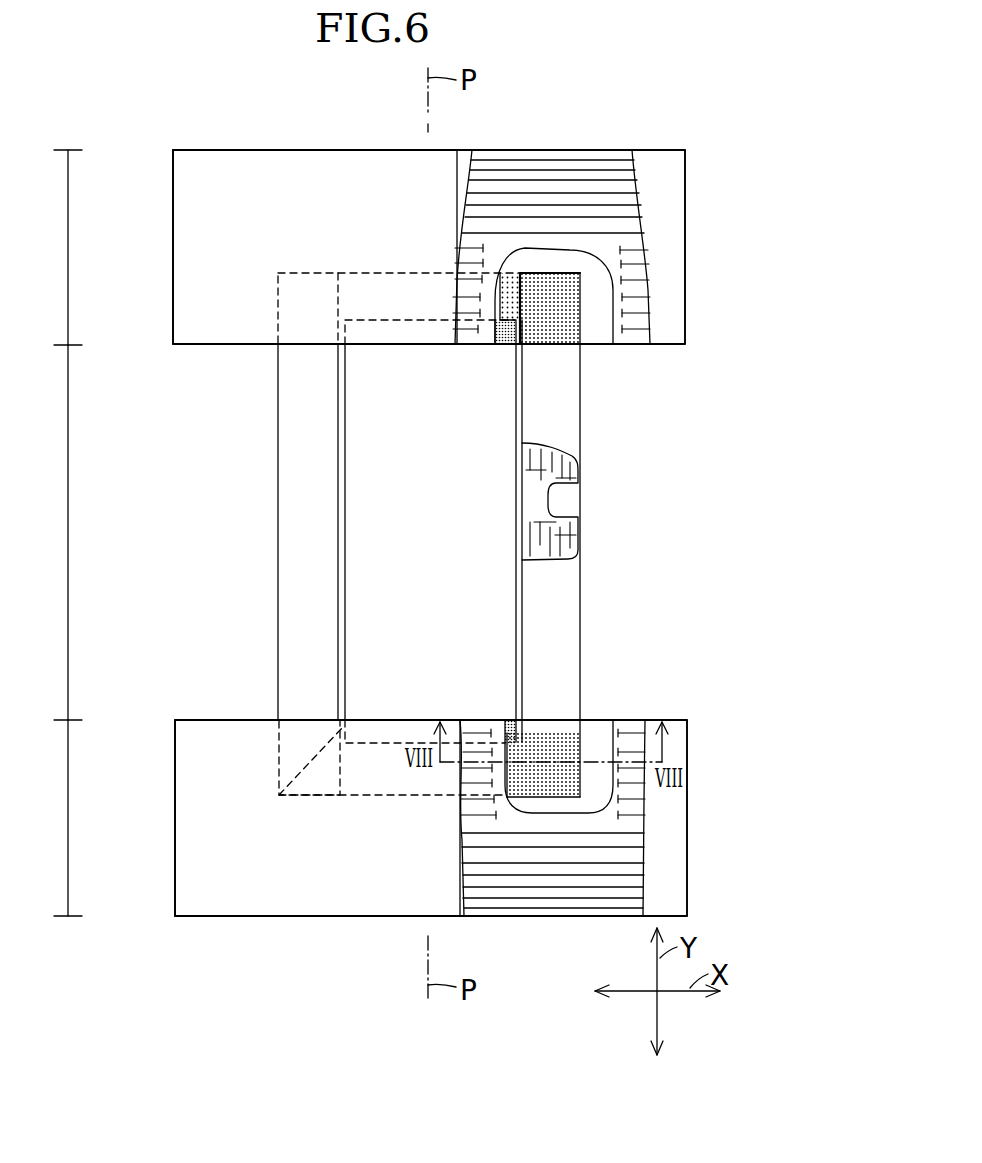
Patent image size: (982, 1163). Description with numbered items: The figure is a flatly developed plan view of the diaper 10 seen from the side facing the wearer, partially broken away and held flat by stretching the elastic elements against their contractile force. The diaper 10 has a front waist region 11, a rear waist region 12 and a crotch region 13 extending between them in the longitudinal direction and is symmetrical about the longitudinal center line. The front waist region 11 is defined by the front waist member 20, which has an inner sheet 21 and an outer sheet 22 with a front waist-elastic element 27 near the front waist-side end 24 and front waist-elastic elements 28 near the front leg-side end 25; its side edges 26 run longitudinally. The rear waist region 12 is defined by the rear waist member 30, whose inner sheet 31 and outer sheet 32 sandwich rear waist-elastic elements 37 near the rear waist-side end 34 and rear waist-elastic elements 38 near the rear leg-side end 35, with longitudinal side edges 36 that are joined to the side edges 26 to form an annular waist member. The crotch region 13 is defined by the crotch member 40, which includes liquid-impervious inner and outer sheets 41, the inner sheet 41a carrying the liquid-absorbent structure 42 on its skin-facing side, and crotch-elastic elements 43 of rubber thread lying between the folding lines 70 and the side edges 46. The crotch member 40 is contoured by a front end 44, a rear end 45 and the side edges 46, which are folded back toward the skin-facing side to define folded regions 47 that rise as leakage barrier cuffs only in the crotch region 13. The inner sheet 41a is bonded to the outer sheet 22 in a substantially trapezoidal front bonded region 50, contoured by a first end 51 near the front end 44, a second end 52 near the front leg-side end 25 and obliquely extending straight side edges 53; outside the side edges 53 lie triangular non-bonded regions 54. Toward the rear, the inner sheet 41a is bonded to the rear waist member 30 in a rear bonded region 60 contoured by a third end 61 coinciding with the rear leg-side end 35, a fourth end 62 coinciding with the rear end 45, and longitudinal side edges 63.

The diaper 10 is at (662, 120).
The front waist region 11 is at (68, 818).
The rear waist region 12 is at (68, 250).
The crotch region 13 is at (68, 540).
The front waist member 20 is at (178, 922).
The inner sheet 21 is at (396, 903).
The outer sheet 22 is at (572, 842).
The front waist-side end 24 is at (255, 917).
The front leg-side end 25 is at (231, 720).
The side edges 26 is at (175, 809).
The front waist-elastic element 27 is at (548, 888).
The front waist-elastic elements 28 is at (489, 823).
The rear waist member 30 is at (173, 148).
The inner sheet 31 is at (397, 167).
The outer sheet 32 is at (466, 221).
The rear waist-side end 34 is at (239, 150).
The rear leg-side end 35 is at (231, 345).
The side edges 36 is at (173, 216).
The rear waist-elastic elements 37 is at (558, 160).
The rear waist-elastic elements 38 is at (623, 248).
The crotch member 40 is at (427, 543).
The inner and outer sheets 41 is at (434, 543).
The inner sheet 41a is at (531, 423).
The liquid-absorbent structure 42 is at (372, 434).
The crotch-elastic elements 43 is at (579, 478).
The front end 44 is at (490, 803).
The rear end 45 is at (486, 262).
The side edges 46 is at (346, 578).
The folded regions 47 is at (435, 532).
The front bonded region 50 is at (478, 752).
The first end 51 is at (563, 790).
The second end 52 is at (512, 730).
The side edges 53 is at (317, 752).
The non-bonded regions 54 is at (575, 748).
The rear bonded region 60 is at (423, 315).
The third end 61 is at (529, 346).
The fourth end 62 is at (560, 273).
The side edges 63 is at (278, 292).
The folding lines 70 is at (278, 528).